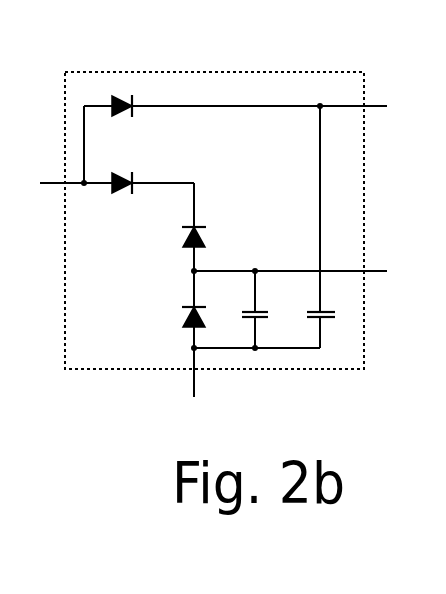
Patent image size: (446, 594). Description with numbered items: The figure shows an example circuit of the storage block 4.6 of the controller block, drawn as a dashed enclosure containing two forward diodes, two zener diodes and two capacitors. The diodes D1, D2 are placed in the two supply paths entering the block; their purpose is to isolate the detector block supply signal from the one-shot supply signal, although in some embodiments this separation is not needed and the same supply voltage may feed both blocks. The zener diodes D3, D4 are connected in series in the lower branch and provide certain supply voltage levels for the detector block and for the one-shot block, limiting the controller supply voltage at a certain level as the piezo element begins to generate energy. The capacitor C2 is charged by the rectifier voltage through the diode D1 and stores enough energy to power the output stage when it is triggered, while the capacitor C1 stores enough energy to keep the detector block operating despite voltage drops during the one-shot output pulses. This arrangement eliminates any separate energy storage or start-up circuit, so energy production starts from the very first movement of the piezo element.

The storage block 4.6 is at (202, 72).
The diode D1 is at (117, 120).
The diode D2 is at (117, 199).
The zener diode D3 is at (170, 320).
The zener diode D4 is at (171, 237).
The capacitor C1 is at (241, 309).
The capacitor C2 is at (306, 227).